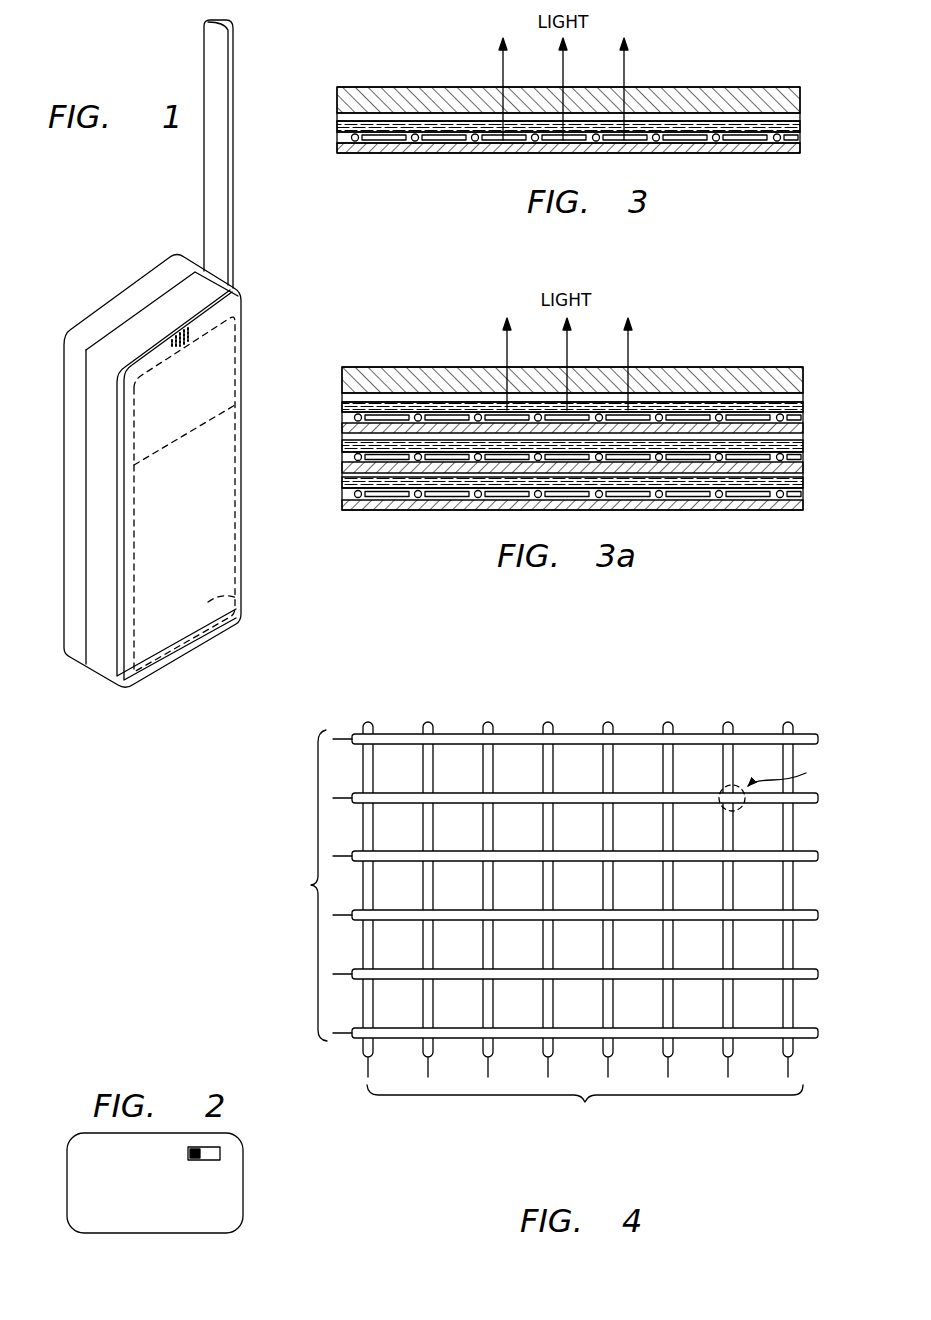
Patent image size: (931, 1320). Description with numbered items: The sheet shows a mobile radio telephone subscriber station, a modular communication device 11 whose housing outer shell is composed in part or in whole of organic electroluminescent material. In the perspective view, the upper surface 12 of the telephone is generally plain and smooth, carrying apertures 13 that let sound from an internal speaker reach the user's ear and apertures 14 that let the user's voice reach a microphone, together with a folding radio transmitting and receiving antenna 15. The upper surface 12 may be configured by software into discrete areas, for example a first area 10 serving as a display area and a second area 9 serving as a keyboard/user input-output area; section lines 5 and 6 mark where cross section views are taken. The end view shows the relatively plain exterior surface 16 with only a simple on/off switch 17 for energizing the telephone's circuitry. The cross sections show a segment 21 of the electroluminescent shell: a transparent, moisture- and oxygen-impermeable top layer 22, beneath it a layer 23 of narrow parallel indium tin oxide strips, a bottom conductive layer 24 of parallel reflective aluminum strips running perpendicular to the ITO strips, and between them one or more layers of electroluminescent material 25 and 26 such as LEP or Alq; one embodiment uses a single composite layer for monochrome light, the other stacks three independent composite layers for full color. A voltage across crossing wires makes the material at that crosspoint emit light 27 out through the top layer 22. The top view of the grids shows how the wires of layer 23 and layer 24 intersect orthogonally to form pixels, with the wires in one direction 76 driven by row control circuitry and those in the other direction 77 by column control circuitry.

In FIG. 1, the section line 5- 5 is at (265, 398).
In FIG. 1, the section line 6- 6 is at (170, 239).
In FIG. 1, the second area 9 is at (248, 600).
In FIG. 1, the first area 10 is at (146, 414).
In FIG. 1, the modular communication device 11 is at (246, 331).
In FIG. 1, the upper surface 12 is at (175, 541).
In FIG. 1, the apertures 13 is at (190, 346).
In FIG. 1, the apertures 14 is at (200, 652).
In FIG. 1, the folding radio transmitting and receiving antenna 15 is at (210, 170).
In FIG. 2, the exterior surface 16 is at (145, 1212).
In FIG. 2, the on/off switch 17 is at (204, 1162).
In FIG. 3, the segment 21 is at (593, 106).
In FIG. 3A, the segment 21 is at (576, 426).
In FIG. 4, the segment 21 is at (593, 865).
In FIG. 3, the top layer 22 is at (762, 92).
In FIG. 3A, the top layer 22 is at (766, 370).
In FIG. 3, the layer 23 is at (800, 118).
In FIG. 3A, the layer 23 is at (803, 398).
In FIG. 4, the layer 23 is at (590, 796).
In FIG. 3, the bottom conductive layer 24 is at (415, 145).
In FIG. 3A, the bottom conductive layer 24 is at (358, 394).
In FIG. 4, the bottom conductive layer 24 is at (546, 722).
In FIG. 3, the electroluminescent material layer 25 is at (801, 127).
In FIG. 3A, the electroluminescent material layer 25 is at (804, 407).
In FIG. 4, the electroluminescent material layer 25 is at (592, 900).
In FIG. 3, the electroluminescent material layer 26 is at (800, 144).
In FIG. 3A, the electroluminescent material layer 26 is at (803, 418).
In FIG. 3, the light 27 is at (502, 72).
In FIG. 3A, the light 27 is at (506, 356).
In FIG. 4, the orthogonal direction 76 is at (251, 943).
In FIG. 4, the other orthogonal direction 77 is at (571, 1181).